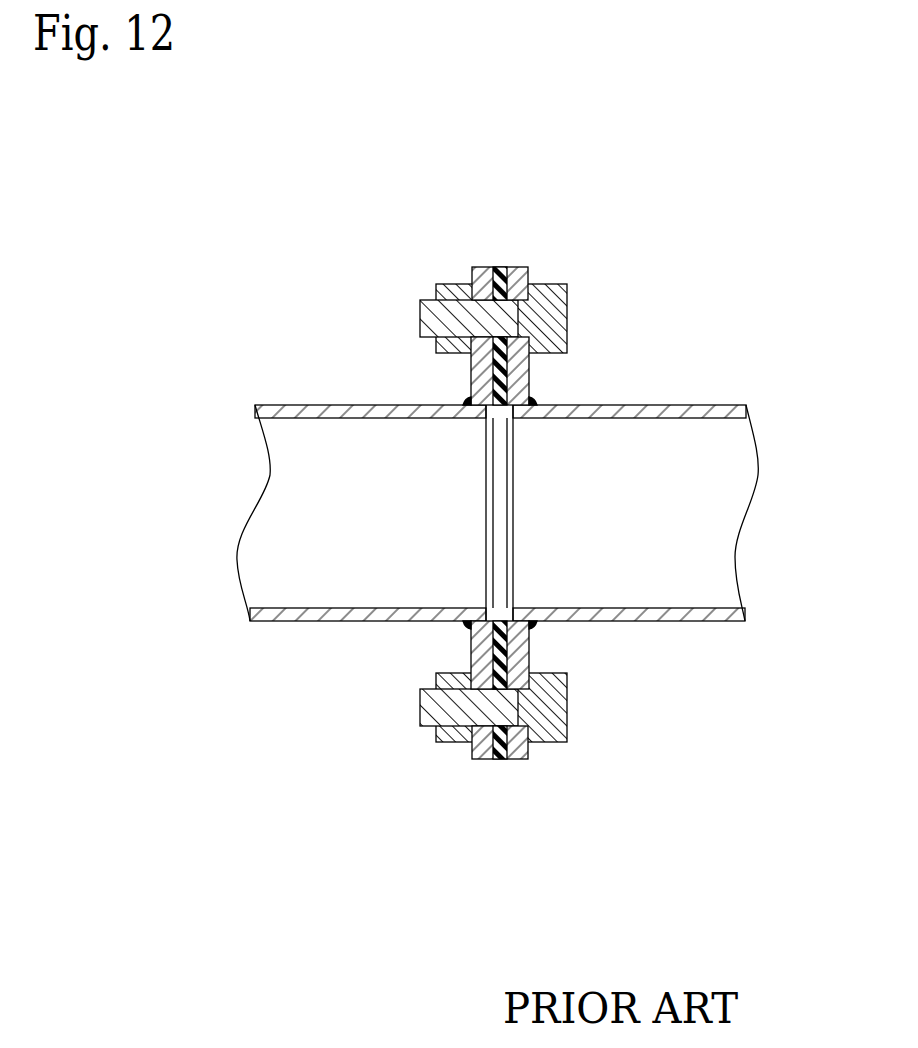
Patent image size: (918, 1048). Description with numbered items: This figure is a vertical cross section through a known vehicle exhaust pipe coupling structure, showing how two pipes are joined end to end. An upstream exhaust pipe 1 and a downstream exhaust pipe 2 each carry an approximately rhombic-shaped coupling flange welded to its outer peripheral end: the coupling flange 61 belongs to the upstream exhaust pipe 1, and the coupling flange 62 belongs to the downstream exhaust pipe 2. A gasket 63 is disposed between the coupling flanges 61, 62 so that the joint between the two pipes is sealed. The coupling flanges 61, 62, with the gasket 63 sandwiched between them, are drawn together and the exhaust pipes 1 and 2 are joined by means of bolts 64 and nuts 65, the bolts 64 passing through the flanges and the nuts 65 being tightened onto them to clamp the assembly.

The upstream exhaust pipe 1 is at (302, 410).
The downstream exhaust pipe 2 is at (684, 410).
The coupling flange 61 is at (485, 277).
The coupling flange 62 is at (522, 282).
The gasket 63 is at (500, 382).
The bolt 64 is at (558, 318).
The nut 65 is at (437, 288).